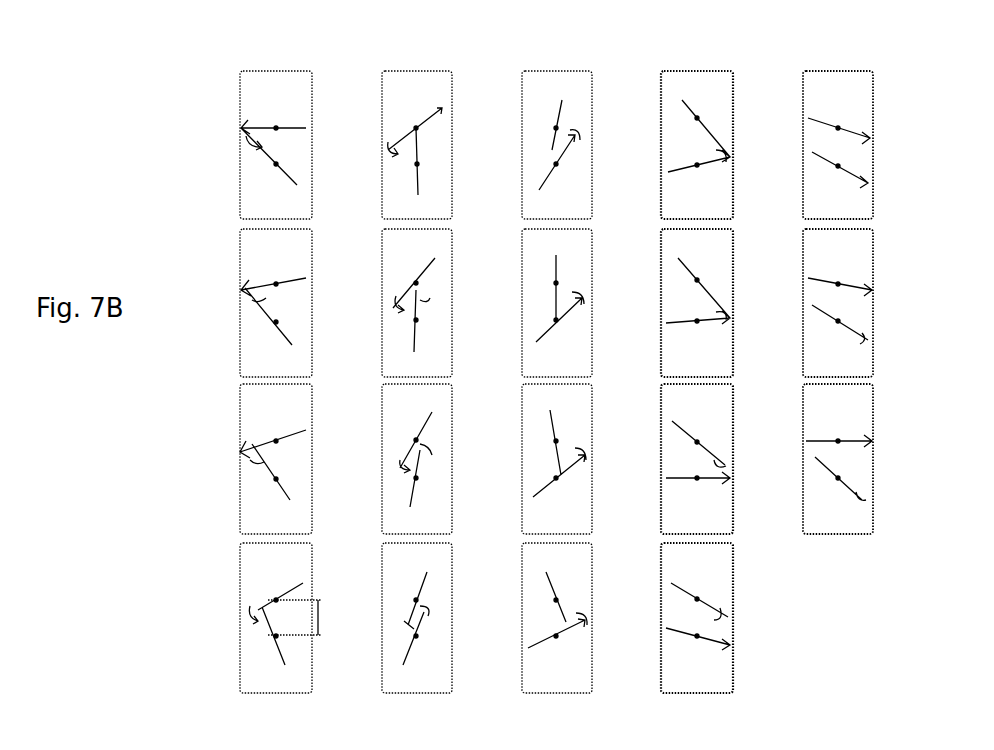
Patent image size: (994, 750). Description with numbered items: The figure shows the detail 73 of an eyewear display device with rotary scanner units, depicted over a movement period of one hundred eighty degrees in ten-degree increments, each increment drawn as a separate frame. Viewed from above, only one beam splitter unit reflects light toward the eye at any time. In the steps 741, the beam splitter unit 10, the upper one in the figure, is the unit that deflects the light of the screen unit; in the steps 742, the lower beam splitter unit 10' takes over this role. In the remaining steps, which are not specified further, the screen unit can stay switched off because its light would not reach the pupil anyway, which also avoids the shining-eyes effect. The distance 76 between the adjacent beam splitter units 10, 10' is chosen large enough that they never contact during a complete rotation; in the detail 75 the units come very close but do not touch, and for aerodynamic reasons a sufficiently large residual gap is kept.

The detail 73 is at (190, 152).
The steps 741 is at (382, 92).
The steps 742 is at (522, 262).
The beam splitter unit 10 is at (422, 95).
The beam splitter unit 10' is at (455, 161).
The detail 75 is at (262, 606).
The distance 76 is at (306, 617).